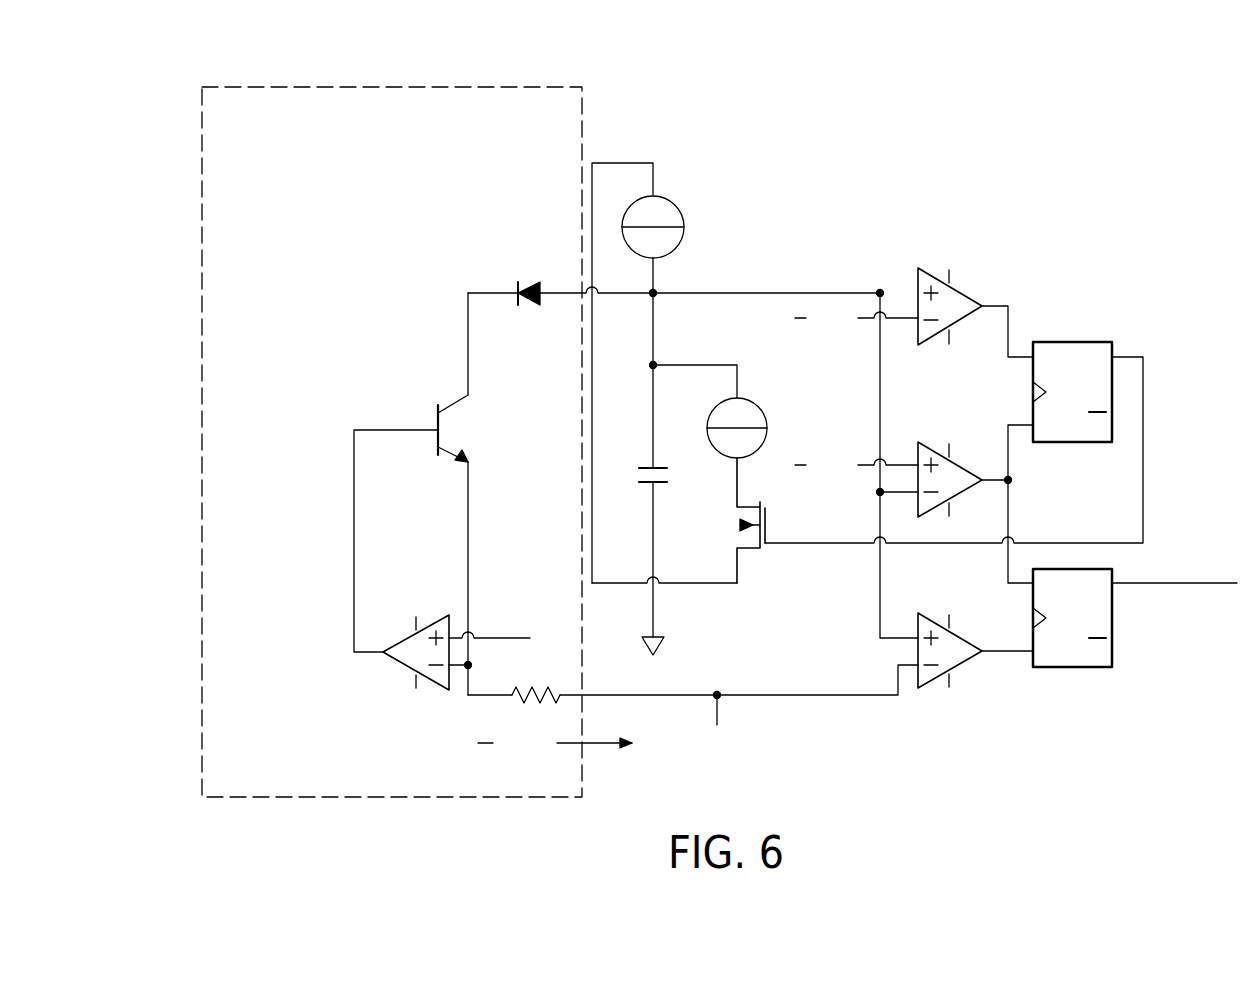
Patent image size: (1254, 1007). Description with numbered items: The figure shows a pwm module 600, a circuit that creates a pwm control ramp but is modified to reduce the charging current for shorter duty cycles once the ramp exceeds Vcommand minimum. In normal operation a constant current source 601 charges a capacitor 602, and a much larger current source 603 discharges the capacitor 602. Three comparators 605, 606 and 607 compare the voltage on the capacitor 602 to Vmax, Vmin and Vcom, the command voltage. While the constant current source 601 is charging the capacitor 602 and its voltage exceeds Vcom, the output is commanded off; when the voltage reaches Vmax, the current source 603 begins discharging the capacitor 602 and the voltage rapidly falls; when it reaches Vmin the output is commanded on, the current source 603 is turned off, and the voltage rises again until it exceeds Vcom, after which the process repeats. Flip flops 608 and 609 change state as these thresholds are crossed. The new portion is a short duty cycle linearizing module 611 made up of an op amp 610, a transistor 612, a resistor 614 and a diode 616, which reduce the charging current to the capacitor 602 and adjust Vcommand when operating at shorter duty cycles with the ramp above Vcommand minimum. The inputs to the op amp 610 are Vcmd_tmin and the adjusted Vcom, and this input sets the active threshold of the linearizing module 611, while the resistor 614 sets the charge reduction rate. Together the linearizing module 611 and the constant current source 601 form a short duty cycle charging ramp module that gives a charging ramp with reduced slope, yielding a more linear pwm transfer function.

The pwm module 600 is at (773, 775).
The constant current source 601 is at (676, 204).
The capacitor 602 is at (660, 484).
The current source 603 is at (760, 403).
The comparator 605 is at (965, 292).
The comparator 606 is at (965, 468).
The comparator 607 is at (965, 664).
The flip flop 608 is at (1072, 340).
The flip flop 609 is at (1072, 668).
The op amp 610 is at (400, 666).
The short duty cycle linearizing module 611 is at (392, 87).
The transistor 612 is at (437, 420).
The resistor 614 is at (514, 700).
The diode 616 is at (528, 288).